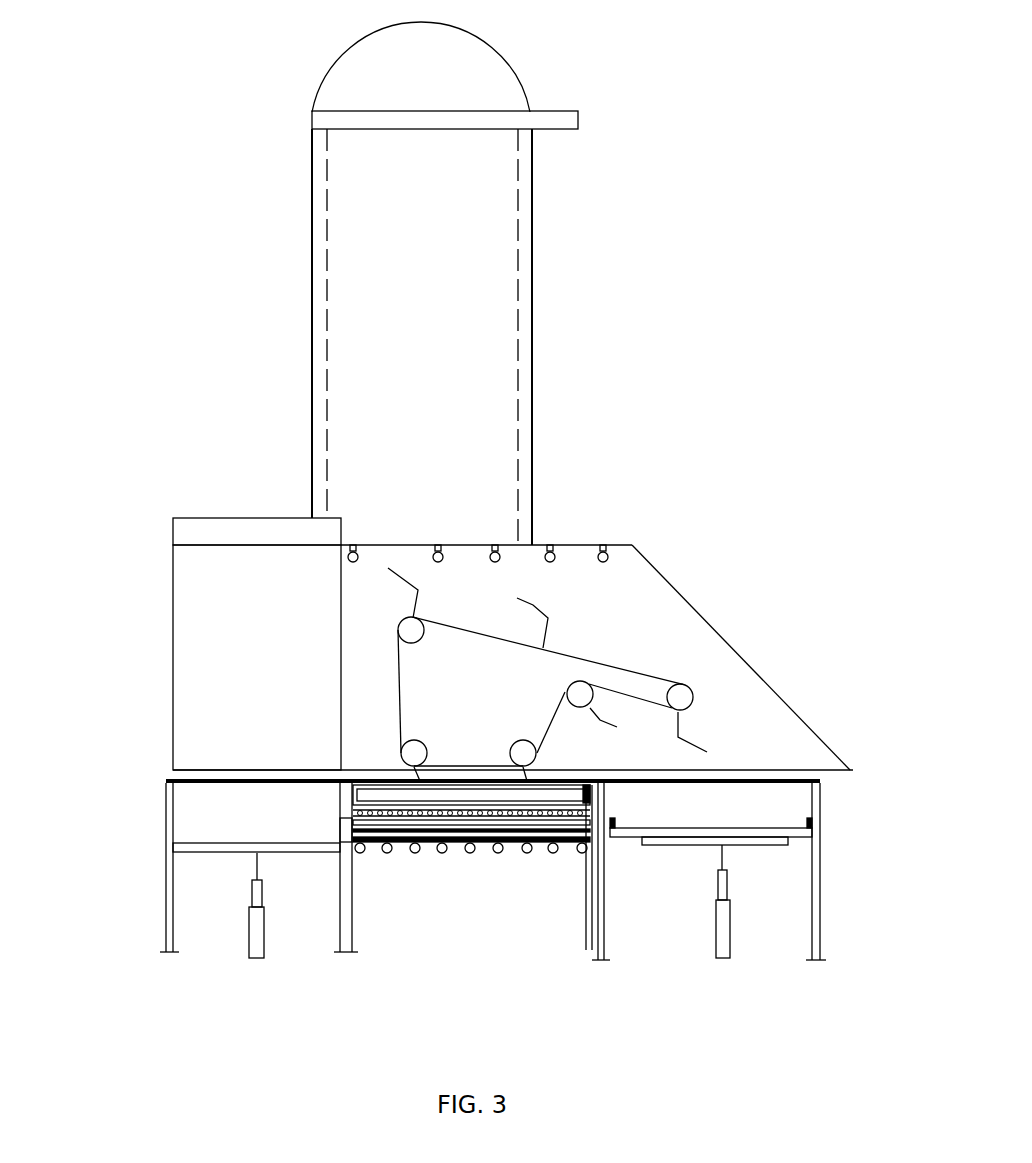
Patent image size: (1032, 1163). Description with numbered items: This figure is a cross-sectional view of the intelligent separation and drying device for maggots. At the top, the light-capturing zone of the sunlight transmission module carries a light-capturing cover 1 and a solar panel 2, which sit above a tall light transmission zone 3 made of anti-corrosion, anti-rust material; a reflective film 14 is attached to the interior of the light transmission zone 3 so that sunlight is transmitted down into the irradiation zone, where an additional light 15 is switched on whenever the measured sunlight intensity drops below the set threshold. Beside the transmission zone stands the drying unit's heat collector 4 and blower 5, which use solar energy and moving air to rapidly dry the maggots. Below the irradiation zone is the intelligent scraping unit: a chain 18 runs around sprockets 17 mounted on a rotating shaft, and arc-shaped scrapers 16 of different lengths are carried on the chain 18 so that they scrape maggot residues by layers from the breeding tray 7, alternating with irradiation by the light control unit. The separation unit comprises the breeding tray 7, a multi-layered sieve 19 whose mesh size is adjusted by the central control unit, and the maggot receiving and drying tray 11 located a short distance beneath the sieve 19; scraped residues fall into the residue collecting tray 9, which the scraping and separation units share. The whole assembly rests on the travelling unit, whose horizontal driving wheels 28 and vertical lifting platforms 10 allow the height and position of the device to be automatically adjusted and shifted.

The light-capturing cover 1 is at (392, 67).
The solar panel 2 is at (555, 124).
The light transmission zone 3 is at (374, 327).
The reflective film 14 is at (350, 337).
The heat collector 4 is at (227, 487).
The blower 5 is at (201, 657).
The additional light 15 is at (524, 507).
The scraper 16 is at (589, 534).
The chain 18 is at (568, 636).
The sprocket 17 is at (738, 665).
The breeding tray 7 is at (472, 915).
The multi-layered sieve 19 is at (415, 926).
The maggot receiving and drying tray 11 is at (465, 937).
The horizontal driving wheel 28 is at (471, 947).
The residue collecting tray 9 is at (749, 857).
The vertical lifting platform 10 is at (474, 836).